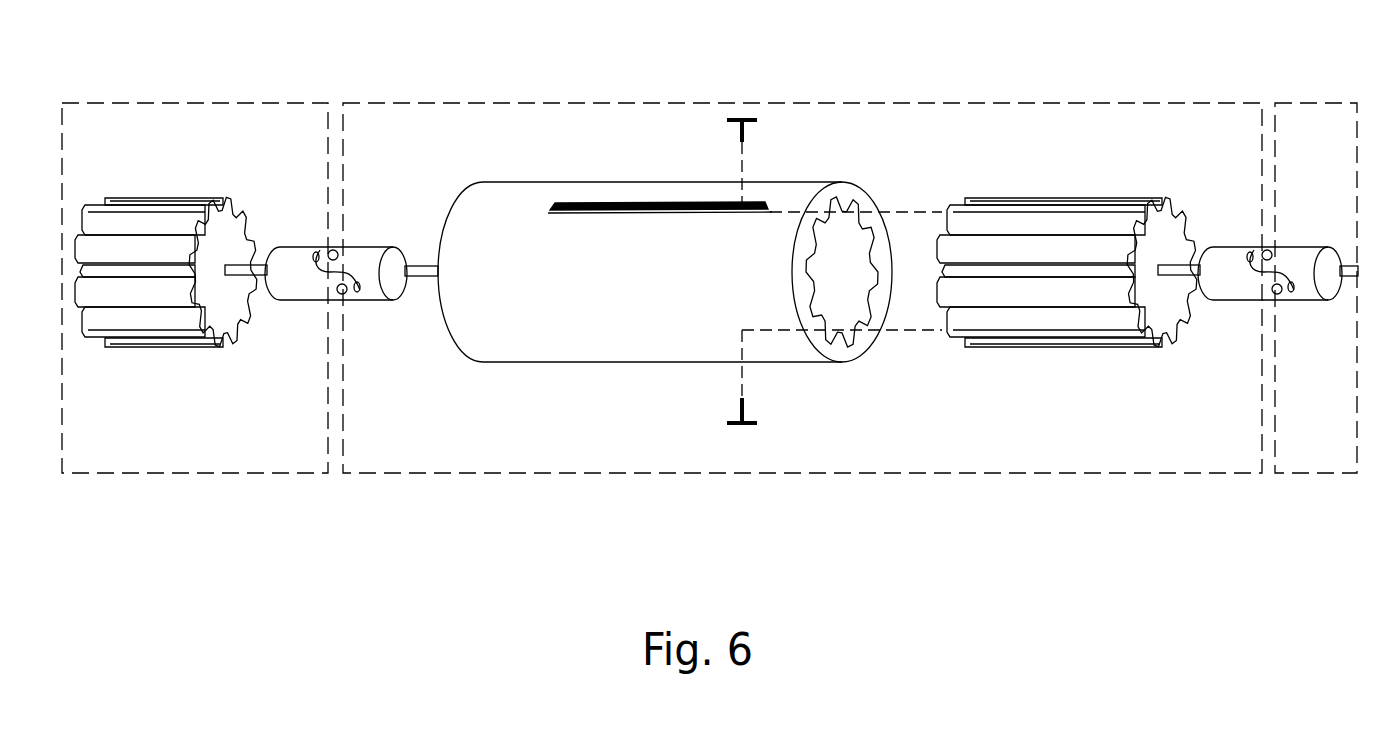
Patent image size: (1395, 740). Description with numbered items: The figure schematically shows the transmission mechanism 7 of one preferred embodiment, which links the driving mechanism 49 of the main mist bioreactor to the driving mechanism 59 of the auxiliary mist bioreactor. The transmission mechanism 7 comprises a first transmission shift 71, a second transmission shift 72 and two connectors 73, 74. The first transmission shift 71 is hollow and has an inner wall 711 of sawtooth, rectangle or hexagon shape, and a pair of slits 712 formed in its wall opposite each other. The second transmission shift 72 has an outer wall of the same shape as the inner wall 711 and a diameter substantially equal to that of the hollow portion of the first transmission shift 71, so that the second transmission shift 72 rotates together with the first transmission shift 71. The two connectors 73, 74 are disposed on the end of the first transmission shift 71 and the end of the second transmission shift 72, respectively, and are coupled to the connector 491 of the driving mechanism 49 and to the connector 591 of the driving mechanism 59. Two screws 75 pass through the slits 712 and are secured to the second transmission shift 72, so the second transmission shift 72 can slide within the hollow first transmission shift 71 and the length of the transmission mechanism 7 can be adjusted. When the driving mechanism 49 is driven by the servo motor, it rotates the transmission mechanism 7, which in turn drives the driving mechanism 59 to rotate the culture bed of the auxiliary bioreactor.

The driving mechanism 49 is at (312, 108).
The connector 491 is at (313, 290).
The transmission mechanism 7 is at (1158, 110).
The first transmission shift 71 is at (508, 210).
The inner wall 711 is at (853, 247).
The slits 712 is at (612, 210).
The second transmission shift 72 is at (1087, 213).
The connector 73 is at (365, 258).
The connector 74 is at (1243, 290).
The screws 75 is at (753, 118).
The driving mechanism 59 is at (1327, 110).
The connector 591 is at (1277, 257).